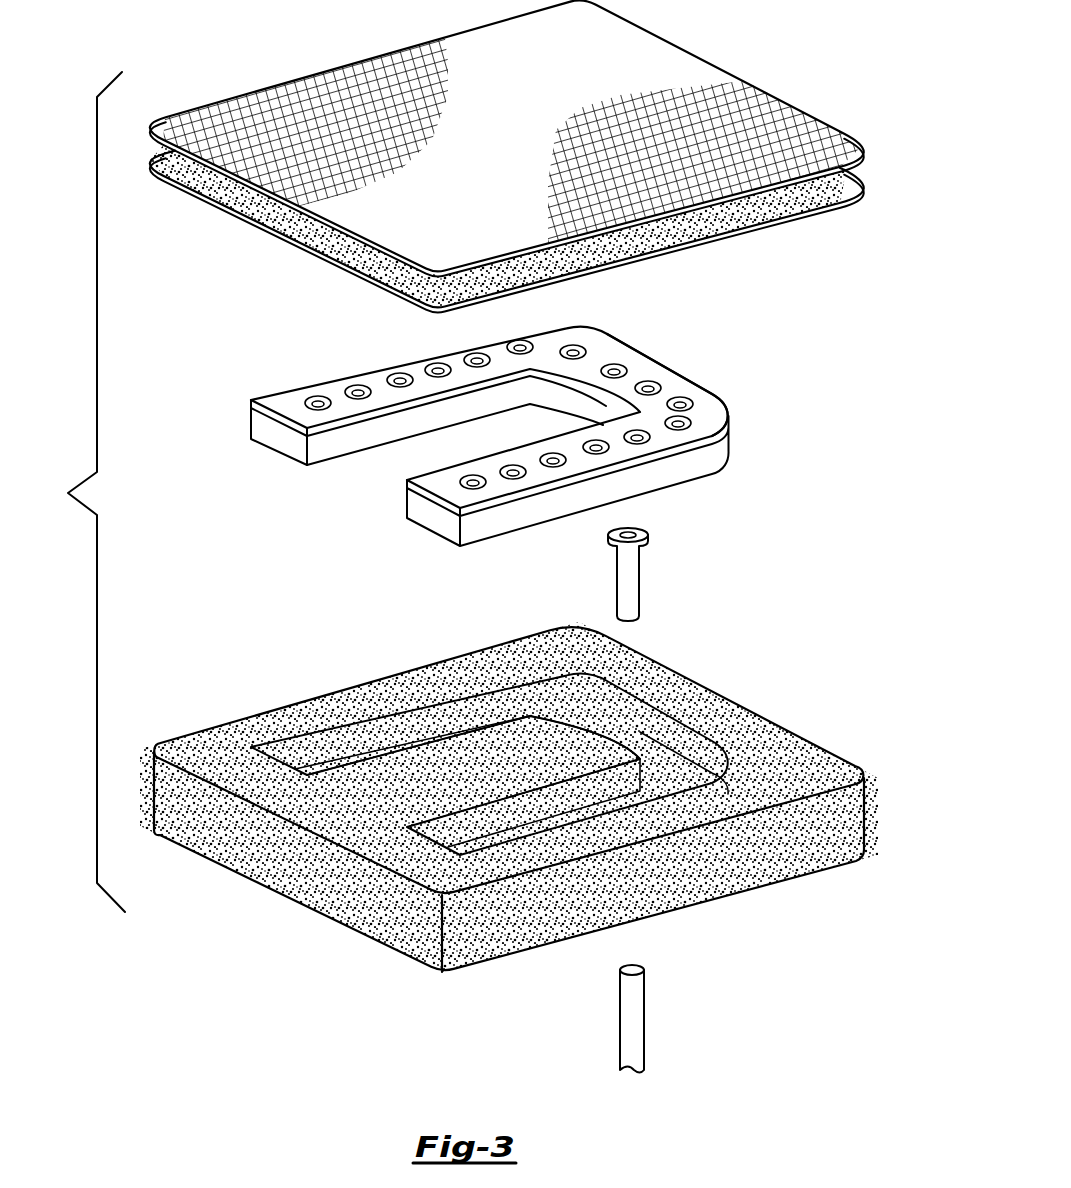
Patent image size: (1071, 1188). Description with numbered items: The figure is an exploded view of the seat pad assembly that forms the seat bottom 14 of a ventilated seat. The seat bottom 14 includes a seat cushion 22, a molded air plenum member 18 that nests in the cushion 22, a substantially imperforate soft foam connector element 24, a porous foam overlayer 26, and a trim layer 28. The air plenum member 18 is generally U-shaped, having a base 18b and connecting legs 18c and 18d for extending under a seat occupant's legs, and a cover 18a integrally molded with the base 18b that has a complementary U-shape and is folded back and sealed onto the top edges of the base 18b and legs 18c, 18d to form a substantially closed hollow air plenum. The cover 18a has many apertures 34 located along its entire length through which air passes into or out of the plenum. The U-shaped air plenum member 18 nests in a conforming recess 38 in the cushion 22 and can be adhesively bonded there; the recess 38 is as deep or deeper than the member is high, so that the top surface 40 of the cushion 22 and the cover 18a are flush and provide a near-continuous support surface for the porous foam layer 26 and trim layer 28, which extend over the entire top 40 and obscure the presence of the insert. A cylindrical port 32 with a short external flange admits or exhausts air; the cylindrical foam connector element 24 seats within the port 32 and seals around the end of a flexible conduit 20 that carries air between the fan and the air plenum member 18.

The seat bottom 14 is at (83, 492).
The air plenum member 18 is at (535, 445).
The cover 18a is at (290, 397).
The base 18b is at (605, 405).
The connecting leg 18c is at (358, 440).
The connecting leg 18d is at (480, 528).
The conduit 20 is at (638, 995).
The seat cushion 22 is at (509, 797).
The foam connector element 24 is at (630, 572).
The porous foam overlayer 26 is at (775, 222).
The trim layer 28 is at (688, 78).
The port 32 is at (640, 752).
The apertures 34 is at (396, 374).
The recess 38 is at (360, 732).
The top surface of cushion 40 is at (250, 730).